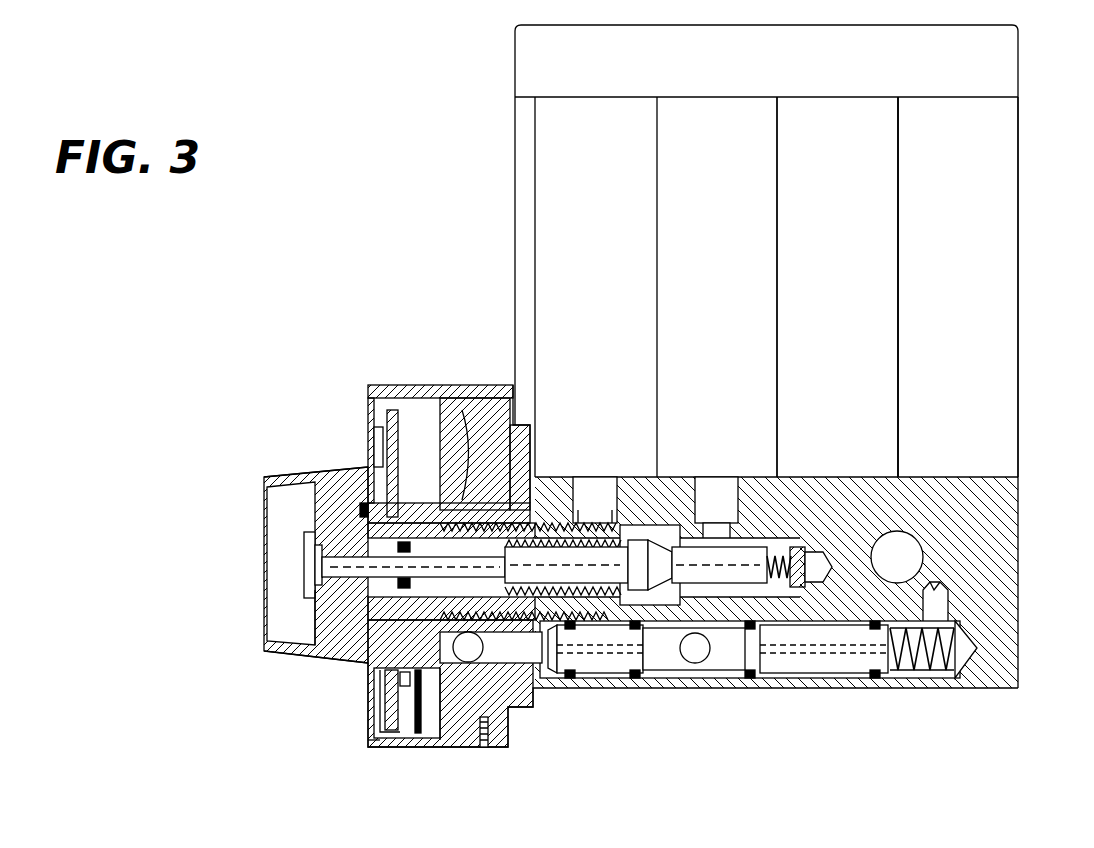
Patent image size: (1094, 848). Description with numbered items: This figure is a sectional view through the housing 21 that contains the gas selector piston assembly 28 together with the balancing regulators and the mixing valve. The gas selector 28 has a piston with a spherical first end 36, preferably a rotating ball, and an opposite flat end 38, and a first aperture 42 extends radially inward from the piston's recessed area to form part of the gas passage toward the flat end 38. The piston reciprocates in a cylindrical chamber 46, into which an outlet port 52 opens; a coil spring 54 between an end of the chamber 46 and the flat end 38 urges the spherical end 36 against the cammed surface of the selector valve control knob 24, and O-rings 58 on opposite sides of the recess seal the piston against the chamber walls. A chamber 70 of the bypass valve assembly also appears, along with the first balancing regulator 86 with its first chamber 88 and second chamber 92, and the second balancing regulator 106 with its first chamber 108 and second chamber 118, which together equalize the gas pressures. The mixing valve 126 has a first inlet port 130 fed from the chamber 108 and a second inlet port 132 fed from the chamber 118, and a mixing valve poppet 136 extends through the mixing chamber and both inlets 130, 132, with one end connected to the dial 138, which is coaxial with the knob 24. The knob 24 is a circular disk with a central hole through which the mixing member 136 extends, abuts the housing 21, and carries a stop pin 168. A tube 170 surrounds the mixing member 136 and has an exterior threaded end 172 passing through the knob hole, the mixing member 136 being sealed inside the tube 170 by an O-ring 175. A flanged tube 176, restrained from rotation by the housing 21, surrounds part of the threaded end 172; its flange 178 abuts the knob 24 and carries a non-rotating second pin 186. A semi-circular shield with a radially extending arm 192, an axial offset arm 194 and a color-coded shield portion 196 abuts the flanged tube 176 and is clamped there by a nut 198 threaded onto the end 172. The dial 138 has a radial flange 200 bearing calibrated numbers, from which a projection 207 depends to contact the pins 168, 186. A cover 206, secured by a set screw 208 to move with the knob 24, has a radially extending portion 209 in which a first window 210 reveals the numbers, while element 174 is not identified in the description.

The housing 21 is at (515, 190).
The selector valve control knob 24 is at (428, 412).
The gas selector piston assembly 28 is at (677, 713).
The first contoured end 36 is at (458, 662).
The second flat end 38 is at (888, 680).
The first aperture 42 is at (695, 652).
The cylindrical chamber 46 is at (933, 672).
The outlet port 52 is at (943, 600).
The coil spring 54 is at (975, 670).
The O-rings 58 is at (637, 688).
The chamber 70 is at (923, 558).
The first balancing regulator 86 is at (878, 90).
The first chamber 88 is at (958, 287).
The second chamber 92 is at (837, 287).
The second balancing regulator 106 is at (682, 90).
The first chamber 108 is at (576, 287).
The second chamber 118 is at (738, 287).
The mixing valve 126 is at (355, 548).
The first inlet port 130 is at (593, 520).
The second inlet port 132 is at (700, 537).
The mixing valve poppet 136 is at (700, 585).
The dial 138 is at (275, 466).
The stop pin 168 is at (375, 625).
The tube 170 is at (528, 697).
The threaded end 172 is at (385, 495).
The piston end 174 is at (552, 668).
The O-ring 175 is at (367, 585).
The flanged tube 176 is at (452, 398).
The flange 178 is at (386, 420).
The second pin 186 is at (415, 718).
The radially extending arm 192 is at (441, 705).
The axial offset arm 194 is at (396, 725).
The semicircular shield portion 196 is at (372, 727).
The nut 198 is at (365, 520).
The radial flange 200 is at (380, 745).
The cap or cover 206 is at (483, 372).
The projection 207 is at (402, 686).
The set screw 208 is at (486, 746).
The radially extending portion 209 is at (370, 694).
The first window 210 is at (370, 445).